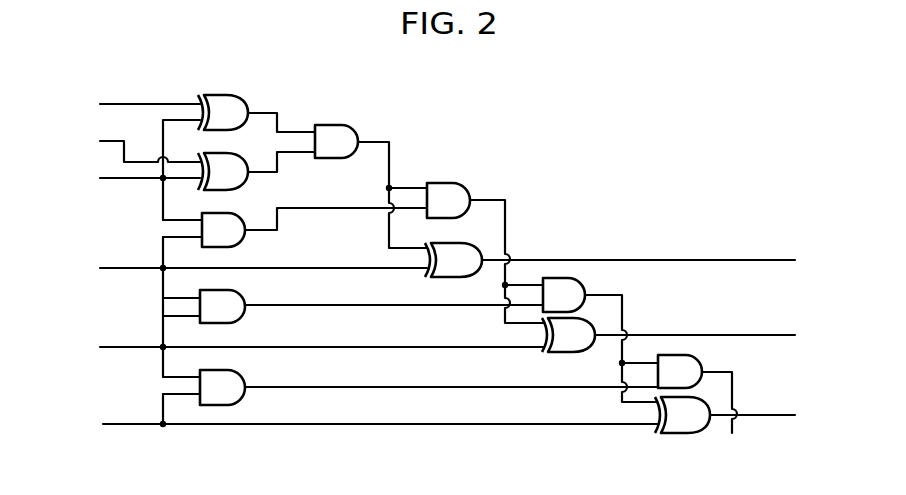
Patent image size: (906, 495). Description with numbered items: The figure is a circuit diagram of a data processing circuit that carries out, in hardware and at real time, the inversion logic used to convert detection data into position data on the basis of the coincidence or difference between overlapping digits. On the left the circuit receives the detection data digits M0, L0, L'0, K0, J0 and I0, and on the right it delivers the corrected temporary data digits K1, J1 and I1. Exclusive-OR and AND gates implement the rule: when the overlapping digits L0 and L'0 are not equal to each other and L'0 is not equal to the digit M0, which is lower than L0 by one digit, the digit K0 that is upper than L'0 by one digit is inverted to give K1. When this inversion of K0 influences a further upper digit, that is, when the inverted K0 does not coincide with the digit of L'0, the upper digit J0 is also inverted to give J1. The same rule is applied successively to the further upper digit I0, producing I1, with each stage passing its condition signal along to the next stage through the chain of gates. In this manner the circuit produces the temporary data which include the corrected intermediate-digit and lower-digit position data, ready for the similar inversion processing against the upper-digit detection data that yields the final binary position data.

The digit M0 is at (130, 108).
The digit L0 is at (130, 143).
The digit L'0 is at (130, 170).
The digit K0 is at (244, 271).
The digit J0 is at (302, 343).
The digit I0 is at (362, 423).
The temporary data K1 is at (654, 256).
The temporary data J1 is at (706, 334).
The temporary data I1 is at (763, 413).